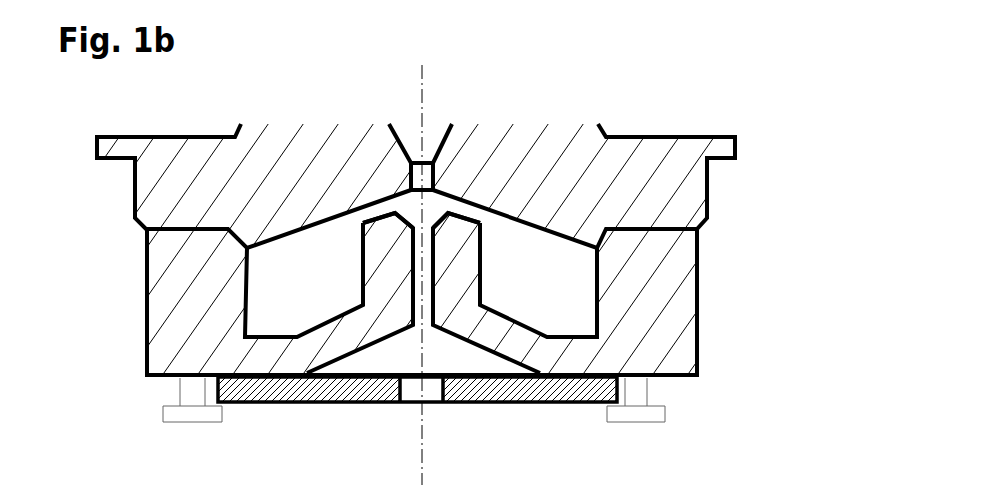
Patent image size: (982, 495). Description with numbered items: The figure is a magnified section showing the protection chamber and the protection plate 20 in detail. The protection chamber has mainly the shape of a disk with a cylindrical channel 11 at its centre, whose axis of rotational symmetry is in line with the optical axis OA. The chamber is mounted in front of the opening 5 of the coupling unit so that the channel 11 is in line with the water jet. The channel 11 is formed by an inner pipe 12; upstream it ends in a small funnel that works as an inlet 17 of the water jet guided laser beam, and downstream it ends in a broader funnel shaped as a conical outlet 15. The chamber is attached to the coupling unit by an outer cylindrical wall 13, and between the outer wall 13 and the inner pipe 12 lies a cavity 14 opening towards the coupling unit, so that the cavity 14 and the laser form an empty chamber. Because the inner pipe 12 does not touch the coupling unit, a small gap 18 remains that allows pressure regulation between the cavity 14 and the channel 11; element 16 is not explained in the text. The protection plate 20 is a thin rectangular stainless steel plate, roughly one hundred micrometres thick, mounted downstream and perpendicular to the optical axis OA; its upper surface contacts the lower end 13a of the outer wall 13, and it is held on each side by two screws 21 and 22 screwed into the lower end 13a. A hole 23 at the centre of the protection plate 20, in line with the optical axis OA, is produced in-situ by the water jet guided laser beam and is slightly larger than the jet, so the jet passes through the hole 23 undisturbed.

The optical axis OA is at (422, 118).
The opening 5 is at (433, 183).
The channel 11 is at (421, 290).
The inner pipe 12 is at (445, 262).
The outer cylindrical wall 13 is at (192, 263).
The lower end of the outer wall 13a is at (155, 377).
The cavity 14 is at (275, 305).
The conical outlet 15 is at (411, 330).
The right cavity 16 is at (435, 305).
The inlet 17 is at (425, 209).
The gap 18 is at (357, 218).
The protection plate 20 is at (310, 393).
The screw 21 is at (195, 410).
The screw 22 is at (652, 417).
The hole 23 is at (427, 390).